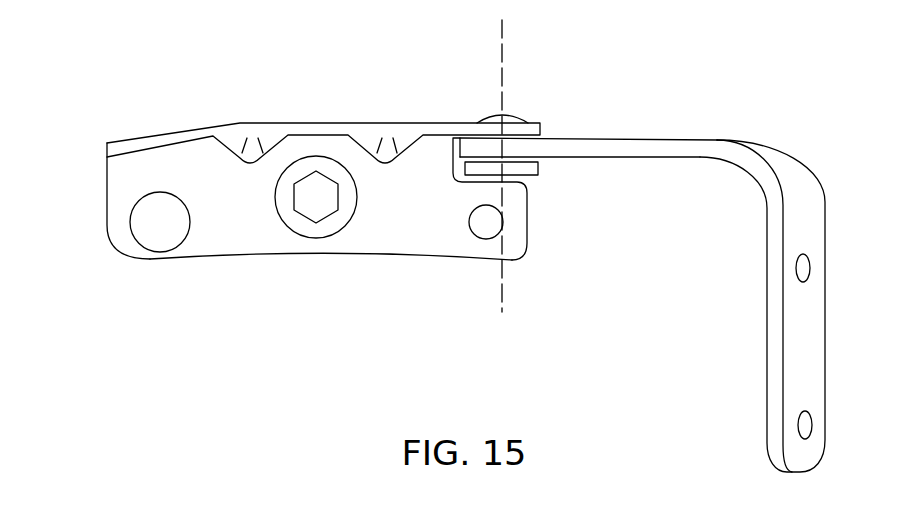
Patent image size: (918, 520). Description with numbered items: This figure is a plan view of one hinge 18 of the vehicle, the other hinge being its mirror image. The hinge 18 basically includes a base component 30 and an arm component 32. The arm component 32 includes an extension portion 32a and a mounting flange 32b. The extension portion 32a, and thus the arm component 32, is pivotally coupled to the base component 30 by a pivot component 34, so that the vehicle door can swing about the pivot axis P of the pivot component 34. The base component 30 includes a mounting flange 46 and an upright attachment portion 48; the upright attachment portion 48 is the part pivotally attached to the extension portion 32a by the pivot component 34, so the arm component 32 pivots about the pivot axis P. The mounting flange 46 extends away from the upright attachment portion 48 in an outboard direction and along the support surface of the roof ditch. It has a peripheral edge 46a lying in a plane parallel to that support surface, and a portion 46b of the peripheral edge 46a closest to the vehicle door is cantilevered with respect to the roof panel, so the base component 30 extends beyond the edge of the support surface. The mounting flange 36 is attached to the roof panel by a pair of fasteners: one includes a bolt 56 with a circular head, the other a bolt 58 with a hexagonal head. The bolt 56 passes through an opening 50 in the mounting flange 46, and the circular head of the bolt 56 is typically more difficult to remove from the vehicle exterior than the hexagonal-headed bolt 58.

The hinge 18 is at (624, 111).
The base component 30 is at (413, 238).
The arm component 32 is at (830, 197).
The extension portion 32a is at (668, 160).
The mounting flange 32b is at (807, 348).
The pivot component 34 is at (538, 168).
The mounting flange 36 is at (803, 268).
The mounting flange 46 is at (232, 247).
The peripheral edge 46a is at (353, 253).
The portion of the peripheral edge 46b is at (528, 227).
The upright attachment portion 48 is at (311, 122).
The opening 50 is at (483, 228).
The bolt 56 is at (160, 232).
The bolt 58 is at (323, 197).
The pivot axis P is at (500, 40).